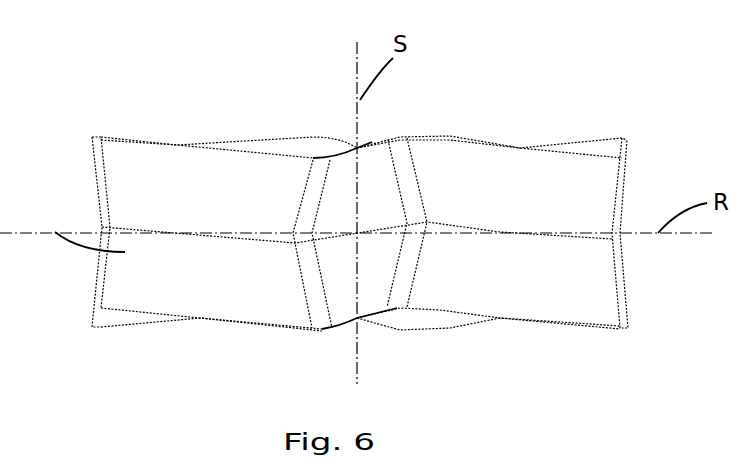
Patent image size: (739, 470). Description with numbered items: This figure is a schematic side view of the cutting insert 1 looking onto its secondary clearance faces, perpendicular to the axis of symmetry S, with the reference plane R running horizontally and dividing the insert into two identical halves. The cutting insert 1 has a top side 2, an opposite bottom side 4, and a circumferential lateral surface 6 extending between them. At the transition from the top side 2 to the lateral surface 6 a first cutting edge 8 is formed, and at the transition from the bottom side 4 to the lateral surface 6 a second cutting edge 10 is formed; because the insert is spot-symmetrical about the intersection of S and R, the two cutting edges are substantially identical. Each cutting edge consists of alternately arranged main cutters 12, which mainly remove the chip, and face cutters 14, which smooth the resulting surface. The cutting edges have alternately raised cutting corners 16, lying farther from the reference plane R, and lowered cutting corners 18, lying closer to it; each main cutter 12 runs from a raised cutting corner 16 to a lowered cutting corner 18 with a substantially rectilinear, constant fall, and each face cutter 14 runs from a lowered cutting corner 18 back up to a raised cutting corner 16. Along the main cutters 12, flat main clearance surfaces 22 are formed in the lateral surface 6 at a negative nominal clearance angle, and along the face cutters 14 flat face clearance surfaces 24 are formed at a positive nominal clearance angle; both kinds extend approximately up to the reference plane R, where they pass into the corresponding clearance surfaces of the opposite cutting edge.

The cutting insert 1 is at (143, 68).
The top side 2 is at (538, 138).
The bottom side 4 is at (133, 317).
The circumferential lateral surface 6 is at (127, 268).
The first cutting edge 8 is at (290, 140).
The second cutting edge 10 is at (433, 328).
The main cutter 12 is at (247, 143).
The face cutter 14 is at (348, 147).
The raised cutting corner 16 is at (95, 133).
The lowered cutting corner 18 is at (313, 158).
The main clearance surface 22 is at (127, 197).
The face clearance surface 24 is at (340, 200).